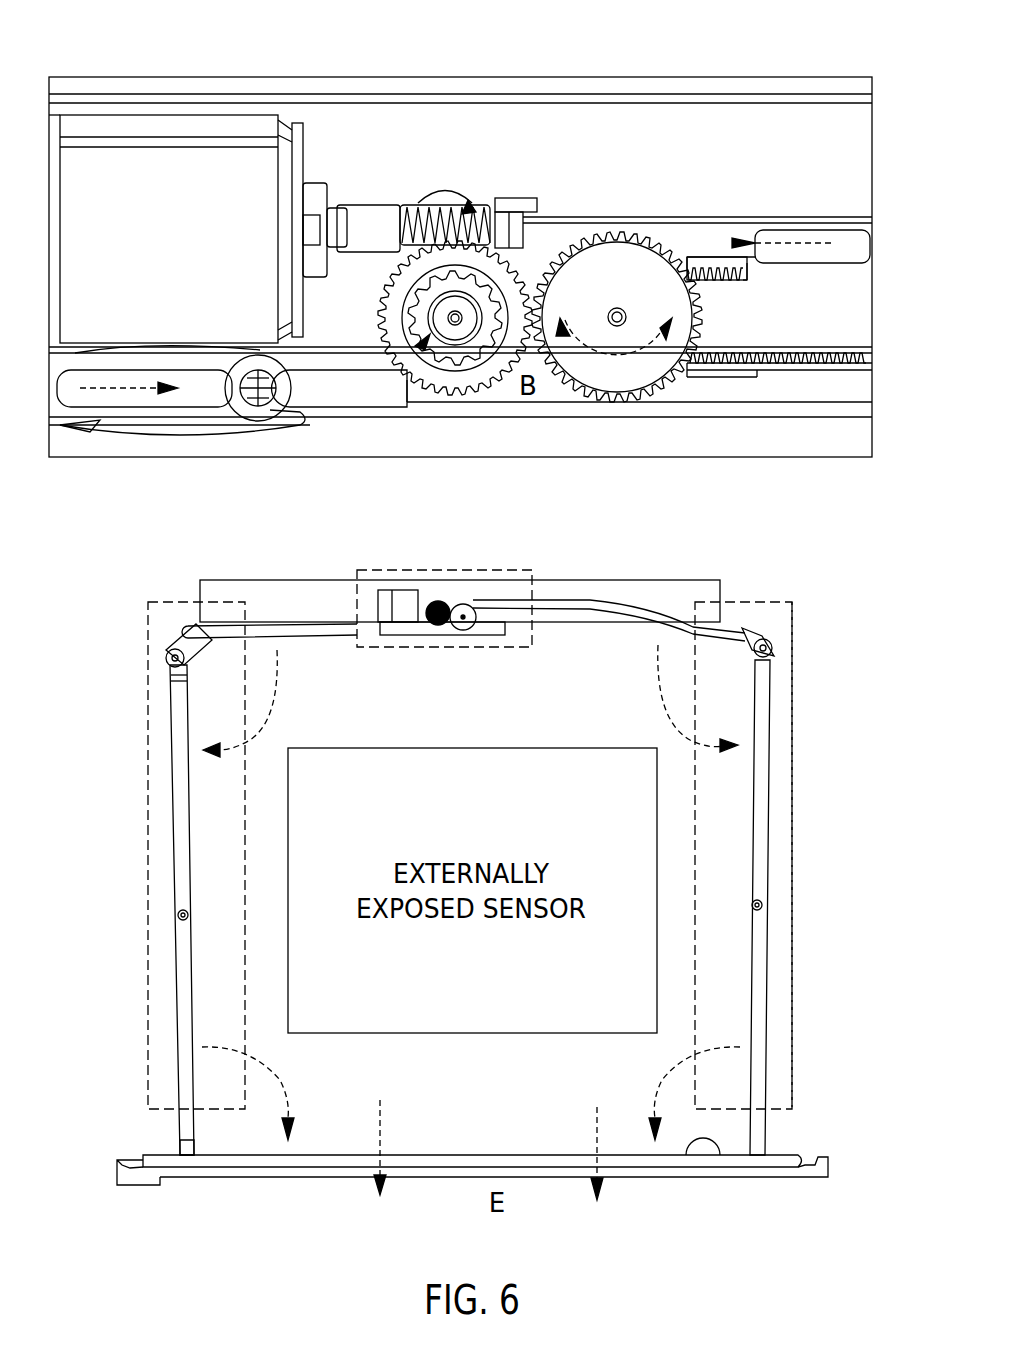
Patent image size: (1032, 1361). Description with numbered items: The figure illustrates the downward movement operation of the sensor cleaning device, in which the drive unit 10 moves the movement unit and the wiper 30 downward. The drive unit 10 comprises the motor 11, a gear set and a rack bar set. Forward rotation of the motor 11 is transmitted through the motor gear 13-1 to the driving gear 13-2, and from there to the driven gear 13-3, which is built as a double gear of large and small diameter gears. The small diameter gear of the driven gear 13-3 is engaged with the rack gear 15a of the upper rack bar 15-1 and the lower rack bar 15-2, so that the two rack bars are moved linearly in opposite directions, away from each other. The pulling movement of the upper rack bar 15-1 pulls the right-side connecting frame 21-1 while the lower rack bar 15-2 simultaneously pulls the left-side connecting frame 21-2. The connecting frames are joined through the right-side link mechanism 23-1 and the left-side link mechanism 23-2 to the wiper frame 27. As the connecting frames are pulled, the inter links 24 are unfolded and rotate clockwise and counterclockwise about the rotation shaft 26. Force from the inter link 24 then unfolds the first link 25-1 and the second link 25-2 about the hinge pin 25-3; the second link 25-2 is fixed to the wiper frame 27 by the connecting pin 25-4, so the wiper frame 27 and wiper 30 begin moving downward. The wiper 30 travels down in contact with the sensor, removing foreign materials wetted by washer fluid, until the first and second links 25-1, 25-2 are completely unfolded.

The drive unit 10 is at (462, 570).
The motor 11 is at (120, 182).
The motor gear 13-1 is at (360, 215).
The driving gear 13-2 is at (510, 198).
The driven gear 13-3 is at (612, 250).
The upper rack bar 15-1 is at (790, 224).
The lower rack bar 15-2 is at (338, 393).
The rack gear 15a is at (733, 287).
The right-side connecting frame 21-1 is at (640, 625).
The left-side connecting frame 21-2 is at (280, 625).
The right-side link mechanism 23-1 is at (794, 1065).
The left-side link mechanism 23-2 is at (172, 755).
The inter link 24 is at (768, 640).
The first link 25-1 is at (768, 765).
The second link 25-2 is at (765, 968).
The hinge pin 25-3 is at (178, 915).
The connecting pin 25-4 is at (178, 1152).
The rotation shaft 26 is at (166, 654).
The wiper frame 27 is at (718, 1145).
The wiper 30 is at (632, 1177).